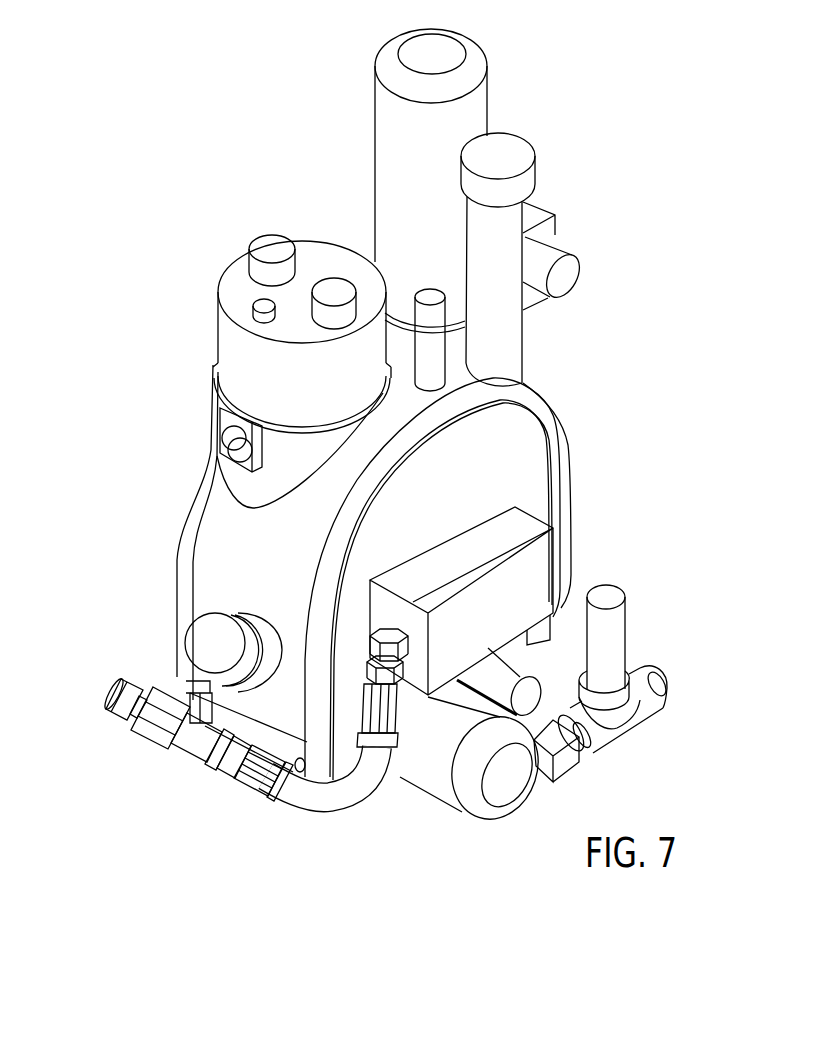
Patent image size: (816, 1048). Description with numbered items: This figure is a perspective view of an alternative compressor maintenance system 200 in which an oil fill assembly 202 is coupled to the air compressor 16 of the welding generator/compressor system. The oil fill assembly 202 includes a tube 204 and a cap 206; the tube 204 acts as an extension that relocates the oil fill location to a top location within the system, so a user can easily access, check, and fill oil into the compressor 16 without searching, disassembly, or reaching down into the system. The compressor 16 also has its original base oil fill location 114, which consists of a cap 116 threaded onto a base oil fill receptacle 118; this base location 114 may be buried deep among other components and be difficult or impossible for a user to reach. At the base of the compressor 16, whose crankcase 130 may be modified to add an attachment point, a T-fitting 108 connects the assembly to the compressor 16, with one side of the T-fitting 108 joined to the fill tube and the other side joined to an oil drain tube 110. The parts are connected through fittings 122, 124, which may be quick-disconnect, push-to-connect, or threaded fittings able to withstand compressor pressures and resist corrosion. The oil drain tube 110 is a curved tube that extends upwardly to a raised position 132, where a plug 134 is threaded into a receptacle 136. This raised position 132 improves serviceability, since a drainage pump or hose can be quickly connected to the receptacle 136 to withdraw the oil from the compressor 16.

The air compressor 16 is at (538, 470).
The T-fitting 108 is at (173, 742).
The oil drain tube 110 is at (330, 810).
The base oil fill location 114 is at (218, 625).
The cap 116 is at (228, 616).
The base oil fill receptacle 118 is at (284, 692).
The fitting 122 is at (140, 733).
The fitting 124 is at (197, 762).
The crankcase 130 is at (550, 405).
The raised position 132 is at (351, 634).
The plug 134 is at (393, 633).
The receptacle 136 is at (395, 666).
The compressor maintenance system 200 is at (666, 268).
The oil fill assembly 202 is at (547, 318).
The tube 204 is at (522, 355).
The cap 206 is at (498, 155).